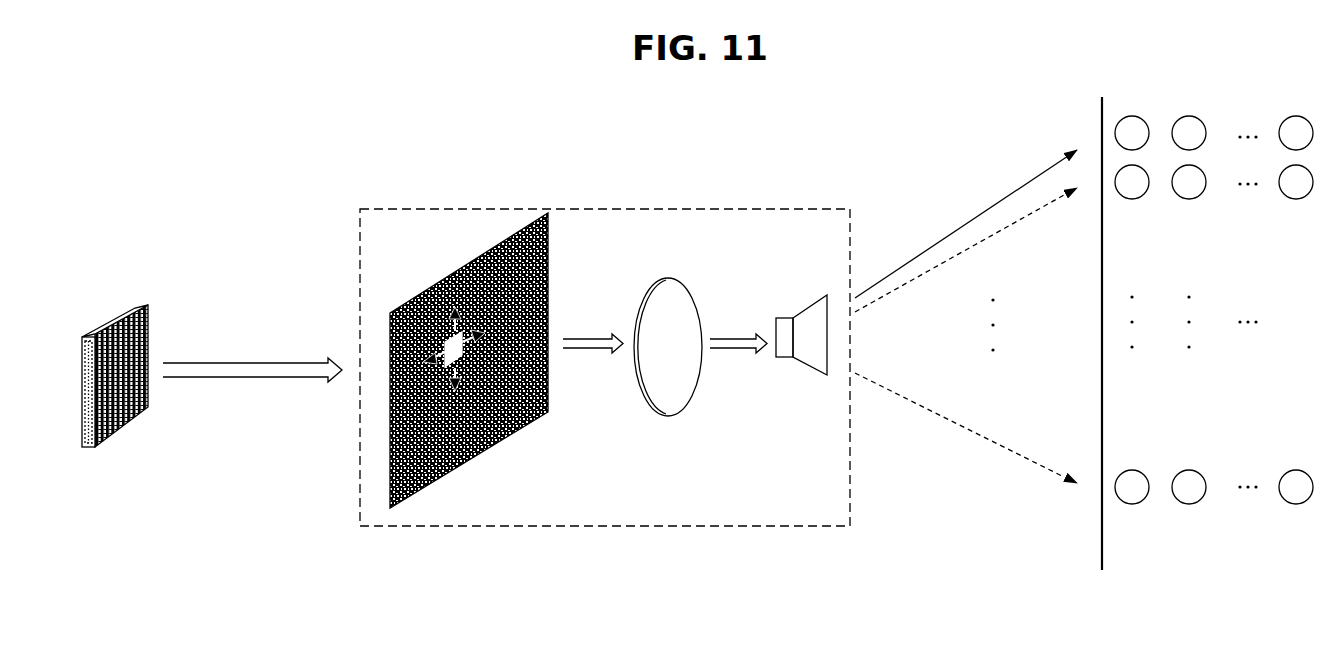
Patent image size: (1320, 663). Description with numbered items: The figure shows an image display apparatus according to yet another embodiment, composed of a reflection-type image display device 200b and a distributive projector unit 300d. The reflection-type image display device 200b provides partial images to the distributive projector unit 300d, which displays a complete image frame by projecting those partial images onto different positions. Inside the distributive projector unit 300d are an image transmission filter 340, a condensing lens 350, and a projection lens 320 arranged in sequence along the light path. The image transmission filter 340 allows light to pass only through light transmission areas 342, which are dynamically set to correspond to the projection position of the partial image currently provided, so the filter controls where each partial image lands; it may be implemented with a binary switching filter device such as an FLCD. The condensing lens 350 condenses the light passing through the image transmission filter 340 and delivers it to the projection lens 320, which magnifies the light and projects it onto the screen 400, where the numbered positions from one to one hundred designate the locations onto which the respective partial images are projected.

The reflection-type image display device 200b is at (140, 301).
The distributive projector unit 300d is at (753, 209).
The image transmission filter 340 is at (548, 292).
The light transmission areas 342 is at (457, 350).
The condensing lens 350 is at (670, 416).
The projection lens 320 is at (803, 371).
The screen 400 is at (1102, 530).